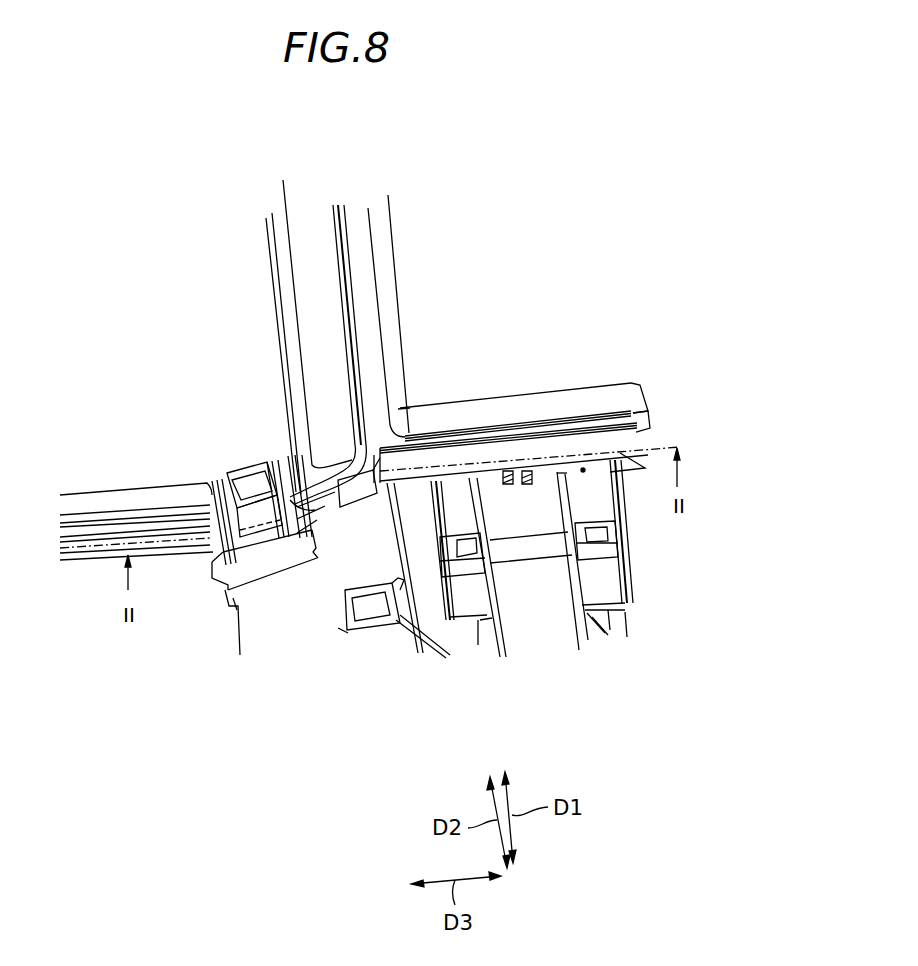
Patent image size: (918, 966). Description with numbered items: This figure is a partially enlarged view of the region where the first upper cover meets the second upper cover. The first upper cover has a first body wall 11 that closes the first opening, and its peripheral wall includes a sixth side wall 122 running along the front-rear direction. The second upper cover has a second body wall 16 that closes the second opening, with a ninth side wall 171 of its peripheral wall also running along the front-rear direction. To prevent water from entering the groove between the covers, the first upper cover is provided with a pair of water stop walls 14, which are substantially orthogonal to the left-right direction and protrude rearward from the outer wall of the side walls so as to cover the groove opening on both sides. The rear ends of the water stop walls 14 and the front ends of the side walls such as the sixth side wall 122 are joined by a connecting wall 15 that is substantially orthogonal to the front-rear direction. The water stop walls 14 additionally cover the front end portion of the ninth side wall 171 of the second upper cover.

The first body wall 11 is at (490, 320).
The water stop walls 14 is at (347, 510).
The connecting wall 15 is at (386, 505).
The second body wall 16 is at (126, 390).
The sixth side wall 122 is at (583, 470).
The ninth side wall 171 is at (182, 555).